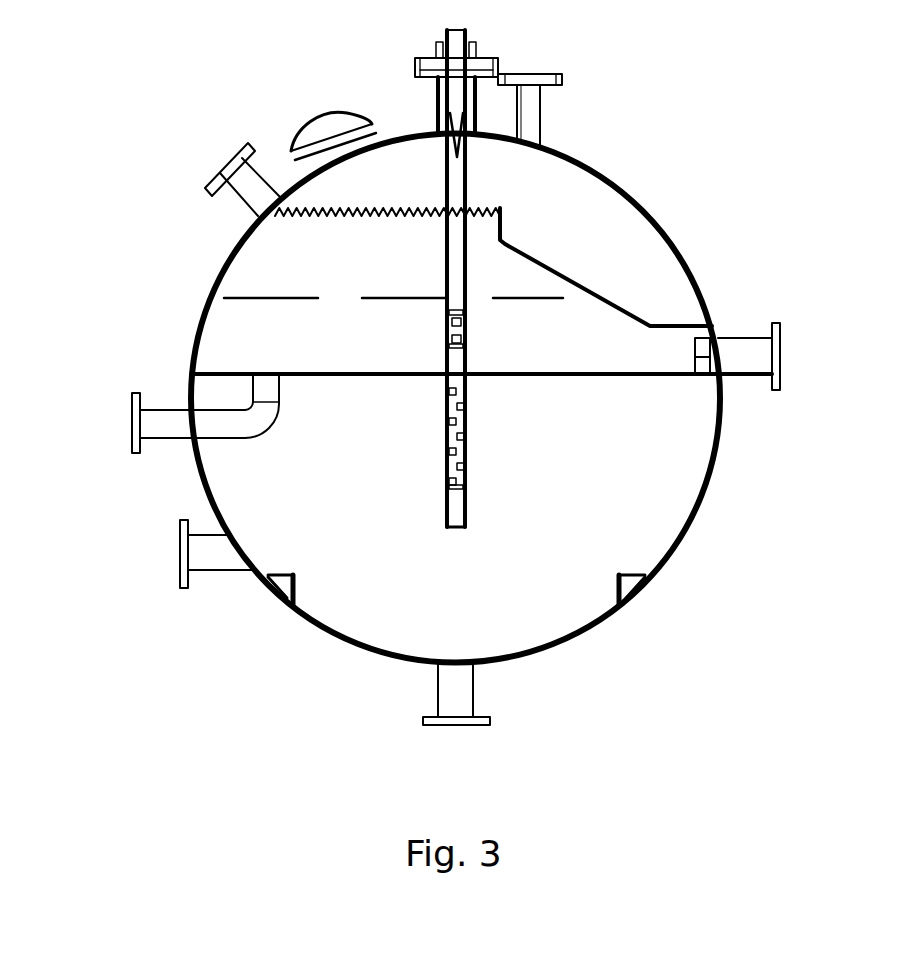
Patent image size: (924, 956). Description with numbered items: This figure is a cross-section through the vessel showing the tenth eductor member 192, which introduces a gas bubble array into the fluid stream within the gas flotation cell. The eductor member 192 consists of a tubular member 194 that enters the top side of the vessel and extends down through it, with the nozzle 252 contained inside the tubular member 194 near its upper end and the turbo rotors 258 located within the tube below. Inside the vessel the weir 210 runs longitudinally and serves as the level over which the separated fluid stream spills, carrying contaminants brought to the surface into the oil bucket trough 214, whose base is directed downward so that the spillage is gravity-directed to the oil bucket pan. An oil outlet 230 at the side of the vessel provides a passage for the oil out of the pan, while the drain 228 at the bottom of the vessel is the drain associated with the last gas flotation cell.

The tenth eductor member 192 is at (440, 275).
The tubular member 194 is at (472, 161).
The weir 210 is at (345, 204).
The oil bucket trough 214 is at (560, 300).
The drain 228 is at (477, 695).
The oil outlet 230 is at (733, 337).
The nozzle 252 is at (443, 140).
The turbo rotors 258 is at (442, 340).